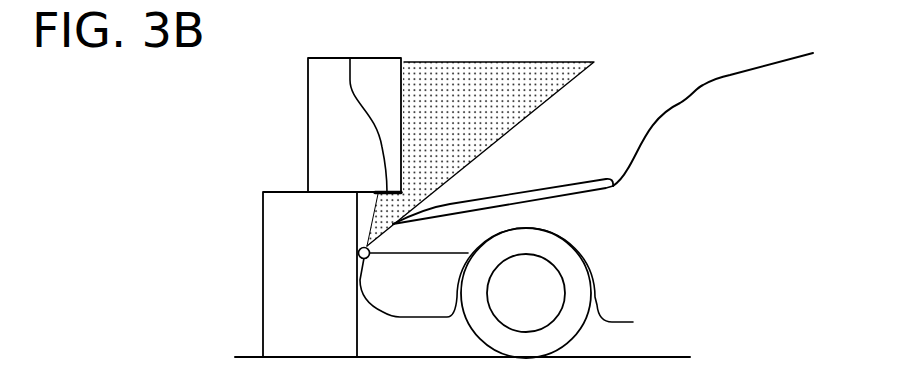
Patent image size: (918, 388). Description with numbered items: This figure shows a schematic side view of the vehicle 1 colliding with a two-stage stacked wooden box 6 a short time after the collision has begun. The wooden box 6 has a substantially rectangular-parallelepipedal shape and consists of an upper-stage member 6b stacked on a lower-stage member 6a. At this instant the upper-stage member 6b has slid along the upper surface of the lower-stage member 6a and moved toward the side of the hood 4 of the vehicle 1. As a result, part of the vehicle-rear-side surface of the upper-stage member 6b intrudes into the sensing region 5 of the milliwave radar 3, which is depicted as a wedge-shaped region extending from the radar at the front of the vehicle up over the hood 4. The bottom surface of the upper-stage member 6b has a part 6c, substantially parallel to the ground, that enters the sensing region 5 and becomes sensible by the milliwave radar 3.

The vehicle 1 is at (678, 107).
The milliwave radar 3 is at (358, 253).
The hood 4 is at (567, 186).
The sensing region 5 is at (501, 71).
The two-stage stacked wooden box 6 is at (316, 96).
The lower-stage member 6a is at (270, 318).
The upper-stage member 6b is at (316, 153).
The part of the bottom surface of the upper-stage member 6c is at (350, 58).